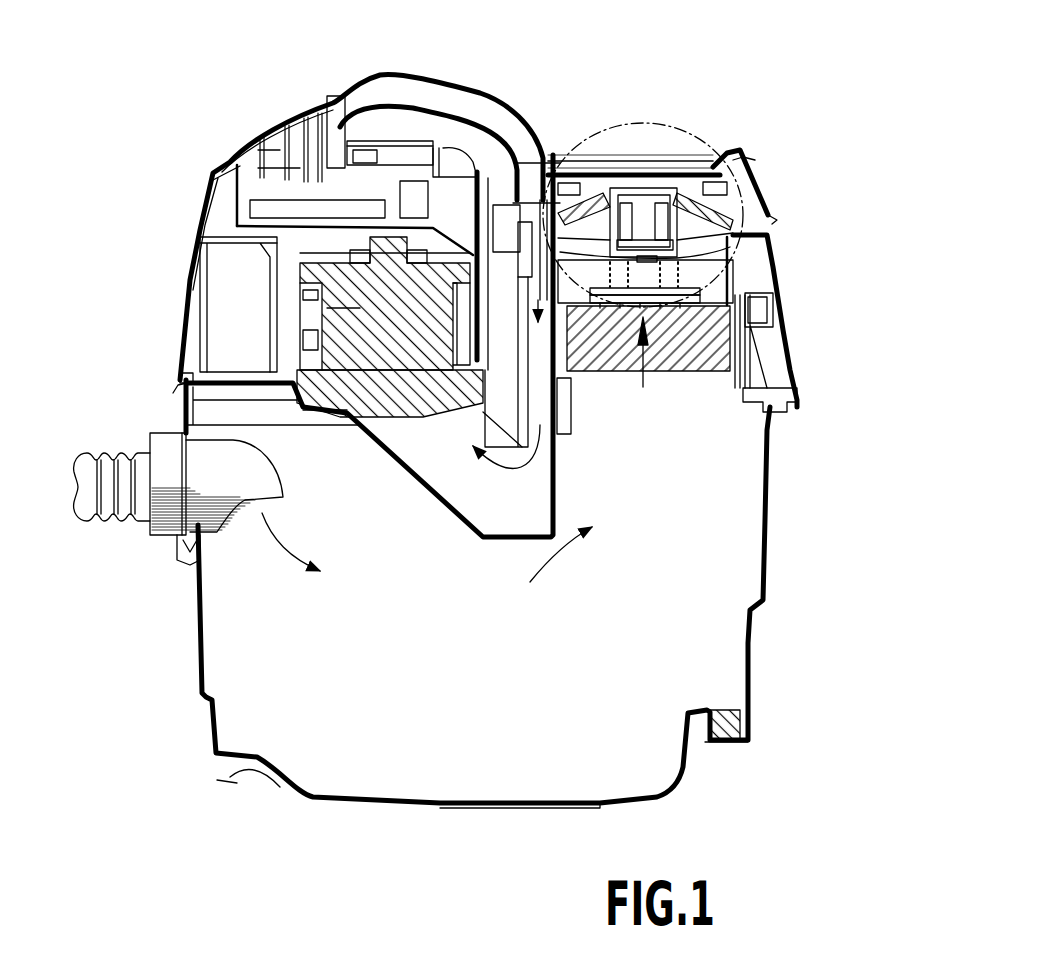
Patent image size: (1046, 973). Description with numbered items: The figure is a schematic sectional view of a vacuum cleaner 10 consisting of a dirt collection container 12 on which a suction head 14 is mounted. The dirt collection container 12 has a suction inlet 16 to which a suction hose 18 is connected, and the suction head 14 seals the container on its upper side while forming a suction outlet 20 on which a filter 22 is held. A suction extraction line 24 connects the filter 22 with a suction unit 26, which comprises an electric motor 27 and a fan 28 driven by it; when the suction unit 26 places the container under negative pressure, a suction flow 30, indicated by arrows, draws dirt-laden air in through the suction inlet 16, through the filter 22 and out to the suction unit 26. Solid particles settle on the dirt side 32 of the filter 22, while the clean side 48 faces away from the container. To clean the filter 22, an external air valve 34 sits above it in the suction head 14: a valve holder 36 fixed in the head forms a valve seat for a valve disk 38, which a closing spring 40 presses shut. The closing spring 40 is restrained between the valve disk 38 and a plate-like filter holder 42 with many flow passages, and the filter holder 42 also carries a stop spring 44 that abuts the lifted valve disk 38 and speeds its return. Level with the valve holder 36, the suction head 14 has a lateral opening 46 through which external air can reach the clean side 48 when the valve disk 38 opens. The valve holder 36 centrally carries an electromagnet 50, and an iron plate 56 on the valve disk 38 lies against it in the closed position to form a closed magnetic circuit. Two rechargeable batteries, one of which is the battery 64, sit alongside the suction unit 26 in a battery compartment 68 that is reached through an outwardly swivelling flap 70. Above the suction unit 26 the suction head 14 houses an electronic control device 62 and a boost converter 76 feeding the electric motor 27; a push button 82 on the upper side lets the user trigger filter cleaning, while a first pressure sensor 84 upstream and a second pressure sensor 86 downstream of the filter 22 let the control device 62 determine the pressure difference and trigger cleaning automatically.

The vacuum cleaner 10 is at (790, 119).
The dirt collection container 12 is at (192, 632).
The suction head 14 is at (397, 71).
The suction inlet 16 is at (166, 514).
The suction hose 18 is at (117, 466).
The suction outlet 20 is at (742, 320).
The filter 22 is at (580, 335).
The suction extraction line 24 is at (577, 178).
The suction unit 26 is at (308, 335).
The electric motor 27 is at (360, 308).
The fan 28 is at (360, 412).
The suction flow 30 is at (555, 571).
The dirt side 32 is at (762, 403).
The external air valve 34 is at (742, 203).
The valve holder 36 is at (565, 185).
The valve disk 38 is at (733, 250).
The closing spring 40 is at (722, 250).
The filter holder 42 is at (735, 312).
The stop spring 44 is at (632, 290).
The lateral opening 46 is at (770, 219).
The clean side 48 is at (745, 348).
The electromagnet 50 is at (660, 230).
The iron plate 56 is at (608, 245).
The electronic control device 62 is at (342, 208).
The rechargeable battery 64 is at (217, 317).
The battery compartment 68 is at (224, 198).
The flap 70 is at (210, 188).
The boost converter 76 is at (413, 197).
The push button 82 is at (283, 118).
The first pressure sensor 84 is at (568, 434).
The second pressure sensor 86 is at (530, 237).